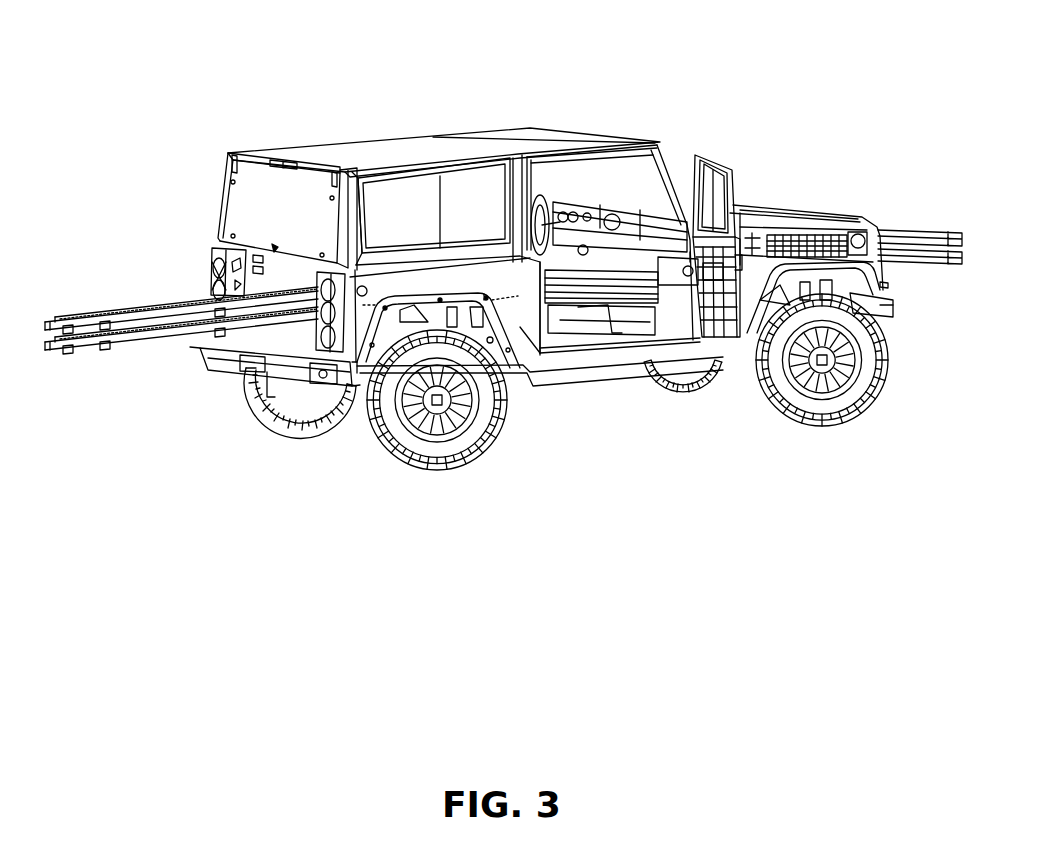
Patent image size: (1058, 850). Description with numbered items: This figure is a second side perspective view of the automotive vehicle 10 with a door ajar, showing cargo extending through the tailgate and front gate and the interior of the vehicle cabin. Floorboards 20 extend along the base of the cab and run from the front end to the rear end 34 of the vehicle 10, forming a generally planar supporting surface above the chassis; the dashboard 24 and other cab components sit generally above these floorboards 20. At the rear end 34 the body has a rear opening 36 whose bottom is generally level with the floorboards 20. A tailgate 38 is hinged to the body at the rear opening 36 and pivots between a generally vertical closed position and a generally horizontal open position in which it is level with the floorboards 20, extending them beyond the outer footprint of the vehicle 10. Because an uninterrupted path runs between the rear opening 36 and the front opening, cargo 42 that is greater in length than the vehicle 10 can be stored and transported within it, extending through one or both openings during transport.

The automotive vehicle 10 is at (471, 116).
The floorboards 20 is at (653, 300).
The dashboard 24 is at (684, 160).
The rear end 34 is at (322, 405).
The rear opening 36 is at (222, 278).
The tailgate 38 is at (222, 370).
The cargo 42 is at (155, 345).